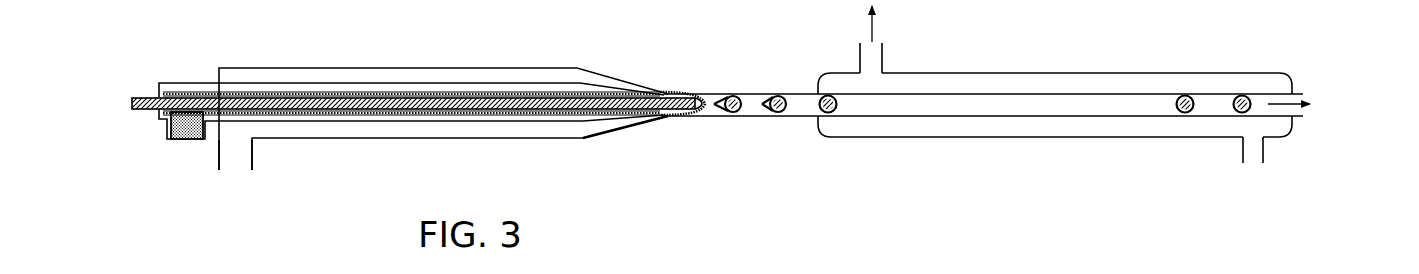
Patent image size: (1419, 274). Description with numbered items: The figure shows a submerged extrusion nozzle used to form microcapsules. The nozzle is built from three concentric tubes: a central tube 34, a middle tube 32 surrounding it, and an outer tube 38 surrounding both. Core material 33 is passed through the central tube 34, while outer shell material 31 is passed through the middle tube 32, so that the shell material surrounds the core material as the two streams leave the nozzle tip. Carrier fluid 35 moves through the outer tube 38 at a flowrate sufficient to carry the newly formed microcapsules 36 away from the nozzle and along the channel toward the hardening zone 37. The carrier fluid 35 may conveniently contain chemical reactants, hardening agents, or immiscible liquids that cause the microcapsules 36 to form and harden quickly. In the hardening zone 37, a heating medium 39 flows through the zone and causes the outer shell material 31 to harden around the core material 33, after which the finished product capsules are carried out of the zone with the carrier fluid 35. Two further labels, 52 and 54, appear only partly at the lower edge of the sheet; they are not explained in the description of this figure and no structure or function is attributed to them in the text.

The outer shell material 31 is at (188, 146).
The middle tube 32 is at (355, 92).
The core material 33 is at (122, 94).
The central tube 34 is at (140, 100).
The carrier fluid 35 is at (233, 182).
The microcapsules 36 is at (730, 93).
The hardening zone 37 is at (1116, 66).
The outer tube 38 is at (452, 69).
The heating medium 39 is at (1253, 168).
The electrode 52 is at (823, 273).
The electrode 54 is at (857, 273).